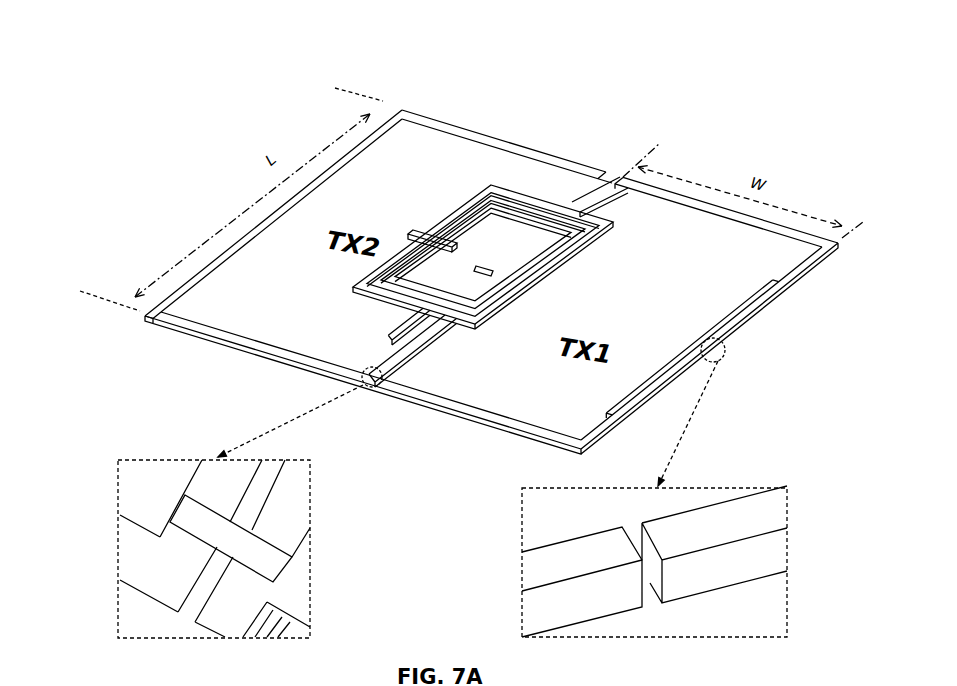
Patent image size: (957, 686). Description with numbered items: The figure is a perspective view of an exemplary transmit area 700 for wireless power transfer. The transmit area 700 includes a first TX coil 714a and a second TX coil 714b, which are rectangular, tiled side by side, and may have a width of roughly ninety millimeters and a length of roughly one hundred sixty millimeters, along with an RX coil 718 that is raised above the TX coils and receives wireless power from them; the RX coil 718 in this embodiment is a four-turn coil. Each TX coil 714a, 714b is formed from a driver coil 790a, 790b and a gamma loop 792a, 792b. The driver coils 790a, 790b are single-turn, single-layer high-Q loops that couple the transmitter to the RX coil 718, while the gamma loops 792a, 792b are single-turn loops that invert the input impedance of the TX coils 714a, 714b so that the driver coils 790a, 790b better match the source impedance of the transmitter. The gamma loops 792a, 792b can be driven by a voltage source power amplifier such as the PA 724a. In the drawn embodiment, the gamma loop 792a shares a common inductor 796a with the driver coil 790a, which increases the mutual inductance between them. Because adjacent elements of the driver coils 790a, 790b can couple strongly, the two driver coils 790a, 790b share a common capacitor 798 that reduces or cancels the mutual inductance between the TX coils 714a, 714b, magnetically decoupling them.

The transmit area 700 is at (145, 92).
The first TX coil 714a is at (720, 182).
The second TX coil 714b is at (502, 128).
The RX coil 718 is at (455, 210).
The PA 724a is at (697, 340).
The driver coil 790a is at (460, 406).
The driver coil 790b is at (218, 328).
The gamma loop 792a is at (750, 297).
The gamma loop 792b is at (390, 336).
The common inductor 796a is at (638, 545).
The common capacitor 798 is at (182, 513).